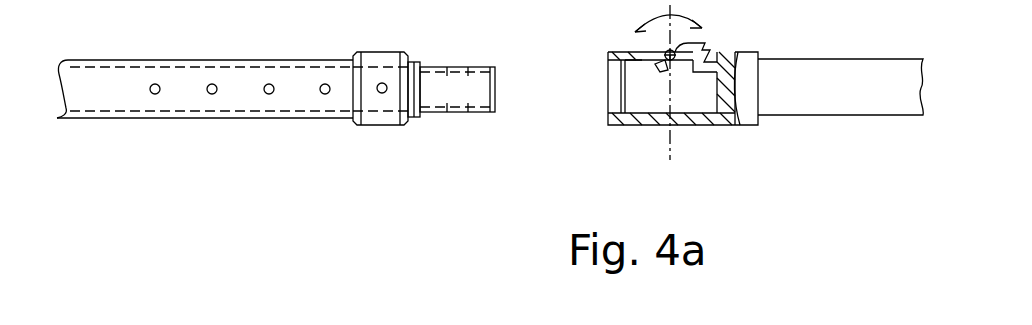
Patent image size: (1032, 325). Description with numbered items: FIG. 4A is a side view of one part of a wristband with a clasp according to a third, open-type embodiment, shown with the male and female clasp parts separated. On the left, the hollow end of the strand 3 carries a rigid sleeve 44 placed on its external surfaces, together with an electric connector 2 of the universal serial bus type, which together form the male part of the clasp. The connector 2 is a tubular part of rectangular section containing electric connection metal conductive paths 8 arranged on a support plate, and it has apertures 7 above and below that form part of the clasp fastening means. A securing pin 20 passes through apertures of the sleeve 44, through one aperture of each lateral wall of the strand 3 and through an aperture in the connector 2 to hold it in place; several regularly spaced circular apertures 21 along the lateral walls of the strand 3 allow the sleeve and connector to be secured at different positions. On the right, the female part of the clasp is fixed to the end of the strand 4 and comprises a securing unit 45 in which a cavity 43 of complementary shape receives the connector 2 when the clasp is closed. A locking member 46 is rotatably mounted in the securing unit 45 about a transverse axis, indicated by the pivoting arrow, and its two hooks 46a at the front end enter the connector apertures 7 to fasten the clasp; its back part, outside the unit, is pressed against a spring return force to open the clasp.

The electric connector 2 is at (432, 67).
The strand 3 is at (178, 60).
The strand 4 is at (827, 70).
The apertures 7 is at (451, 70).
The electric connection metal conductive paths 8 is at (480, 100).
The securing pin 20 is at (384, 93).
The circular apertures 21 is at (212, 94).
The cavity 43 is at (703, 98).
The rigid sleeve 44 is at (378, 52).
The securing unit 45 is at (748, 110).
The locking member 46 is at (712, 47).
The hooks 46a is at (657, 70).